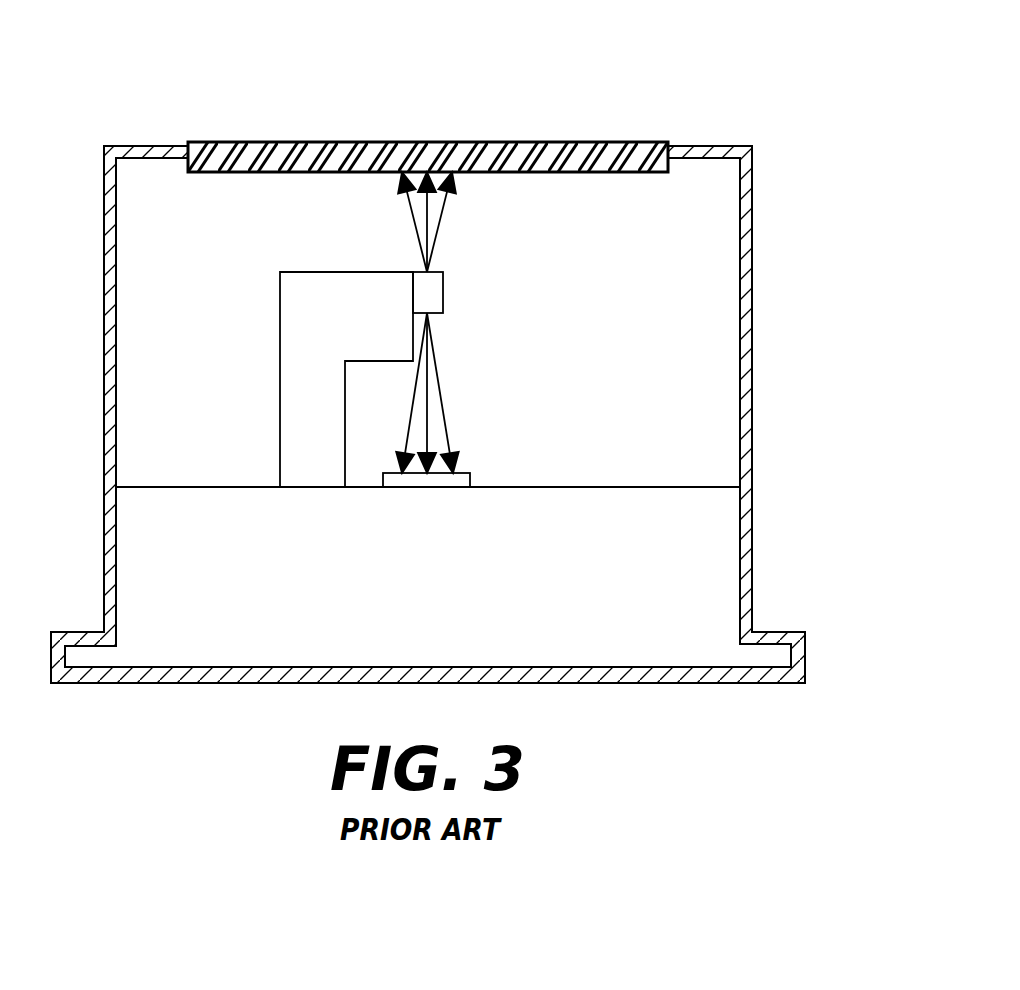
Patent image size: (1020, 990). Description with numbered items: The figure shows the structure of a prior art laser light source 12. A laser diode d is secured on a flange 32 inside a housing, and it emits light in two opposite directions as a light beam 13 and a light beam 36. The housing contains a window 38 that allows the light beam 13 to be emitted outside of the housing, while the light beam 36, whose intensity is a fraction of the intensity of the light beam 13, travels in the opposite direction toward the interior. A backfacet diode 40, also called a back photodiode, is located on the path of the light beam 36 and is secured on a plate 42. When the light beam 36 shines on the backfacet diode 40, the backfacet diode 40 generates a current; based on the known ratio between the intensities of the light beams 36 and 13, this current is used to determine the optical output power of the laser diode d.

The laser light source 12 is at (737, 72).
The light beam 36 is at (133, 146).
The window 38 is at (555, 141).
The flange 32 is at (305, 272).
The light beam 13 is at (446, 214).
The laser diode d is at (438, 292).
The backfacet diode 40 is at (470, 478).
The plate 42 is at (613, 487).